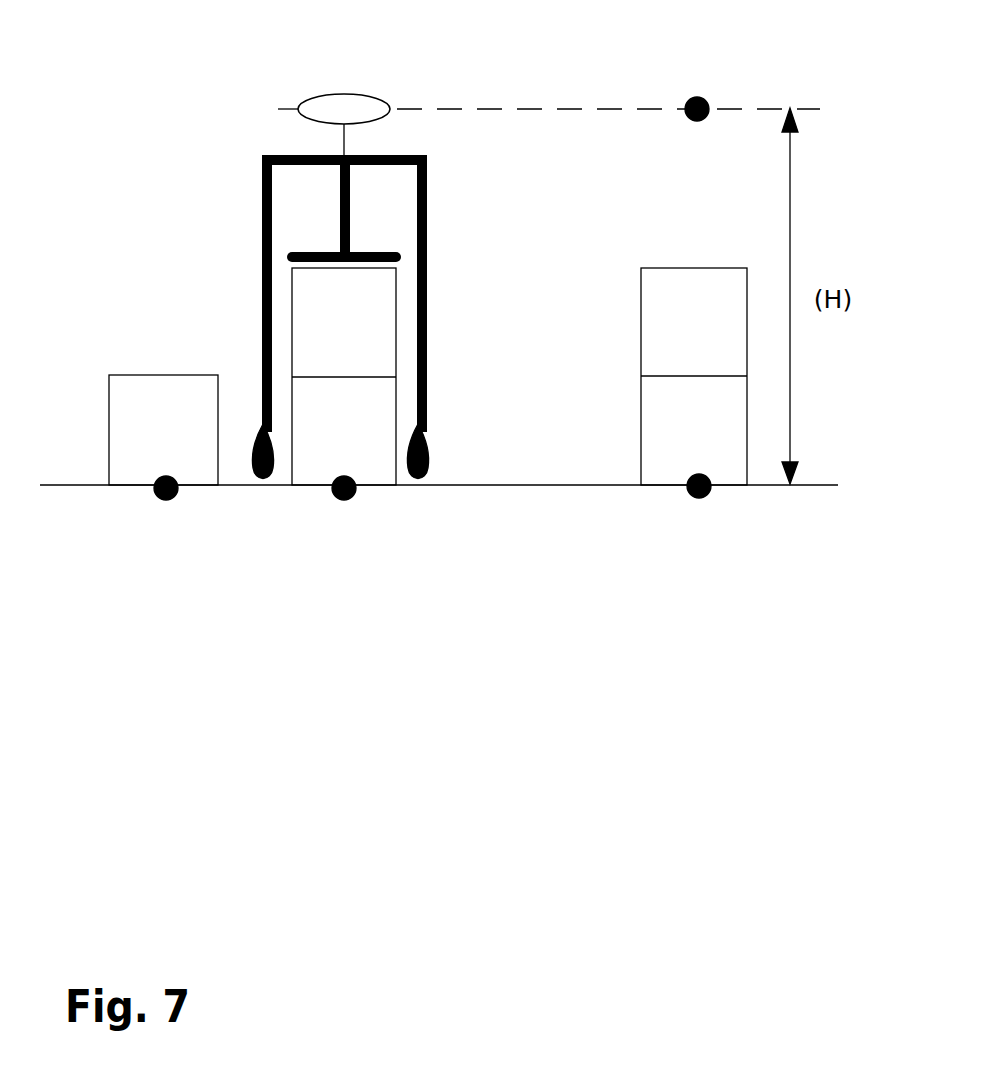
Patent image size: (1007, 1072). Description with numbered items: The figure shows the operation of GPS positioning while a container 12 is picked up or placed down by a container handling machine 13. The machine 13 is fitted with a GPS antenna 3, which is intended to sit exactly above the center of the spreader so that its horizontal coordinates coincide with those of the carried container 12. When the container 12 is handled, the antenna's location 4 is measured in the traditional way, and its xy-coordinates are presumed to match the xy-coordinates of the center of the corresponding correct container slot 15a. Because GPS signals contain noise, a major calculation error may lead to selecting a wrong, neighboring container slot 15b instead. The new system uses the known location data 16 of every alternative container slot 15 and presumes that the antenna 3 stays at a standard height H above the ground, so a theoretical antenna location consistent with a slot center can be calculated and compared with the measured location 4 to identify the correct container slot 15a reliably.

The GPS antenna 3 is at (344, 124).
The location data of the GPS antenna 4 is at (339, 62).
The container 12 is at (428, 376).
The container handling machine 13 is at (262, 192).
The container slot 15 is at (695, 527).
The correct container slot 15a is at (345, 529).
The incorrect container slot 15b is at (165, 529).
The location data of container slot 16 is at (454, 508).